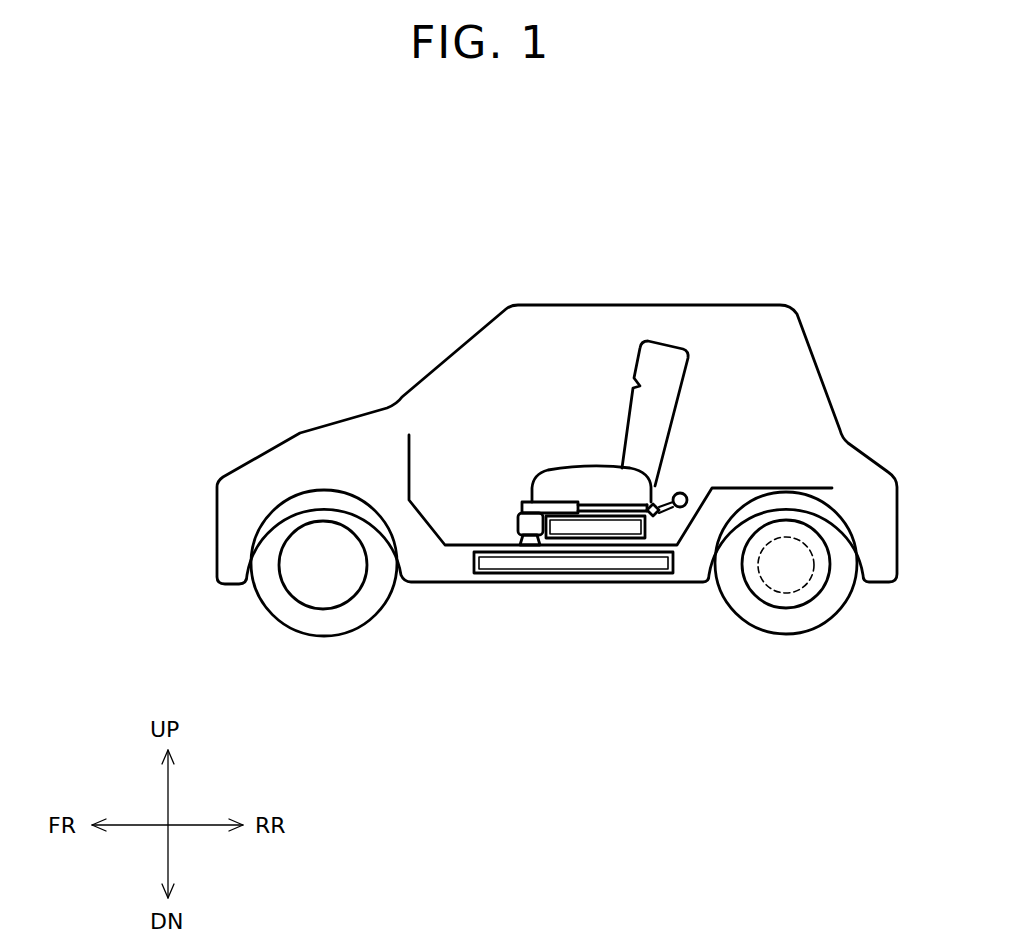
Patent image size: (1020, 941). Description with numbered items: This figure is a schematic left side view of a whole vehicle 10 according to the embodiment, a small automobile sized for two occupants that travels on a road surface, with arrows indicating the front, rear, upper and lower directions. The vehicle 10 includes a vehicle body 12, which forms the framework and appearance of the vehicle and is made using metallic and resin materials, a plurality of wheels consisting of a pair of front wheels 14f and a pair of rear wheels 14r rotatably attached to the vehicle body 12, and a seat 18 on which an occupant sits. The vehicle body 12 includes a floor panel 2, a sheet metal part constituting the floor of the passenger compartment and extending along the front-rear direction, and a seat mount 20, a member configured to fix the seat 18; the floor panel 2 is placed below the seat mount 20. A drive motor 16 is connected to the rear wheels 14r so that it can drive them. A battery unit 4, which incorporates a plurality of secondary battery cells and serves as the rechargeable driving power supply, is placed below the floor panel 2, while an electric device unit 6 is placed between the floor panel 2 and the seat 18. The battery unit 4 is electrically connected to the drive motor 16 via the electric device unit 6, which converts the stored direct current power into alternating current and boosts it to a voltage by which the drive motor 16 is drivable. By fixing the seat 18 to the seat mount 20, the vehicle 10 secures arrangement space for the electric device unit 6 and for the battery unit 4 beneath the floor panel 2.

The vehicle 10 is at (465, 278).
The vehicle body 12 is at (303, 433).
The front wheels 14f is at (280, 597).
The rear wheels 14r is at (837, 585).
The drive motor 16 is at (805, 588).
The seat 18 is at (680, 388).
The seat mount 20 is at (505, 498).
The floor panel 2 is at (682, 545).
The battery unit 4 is at (528, 563).
The electric device unit 6 is at (583, 528).